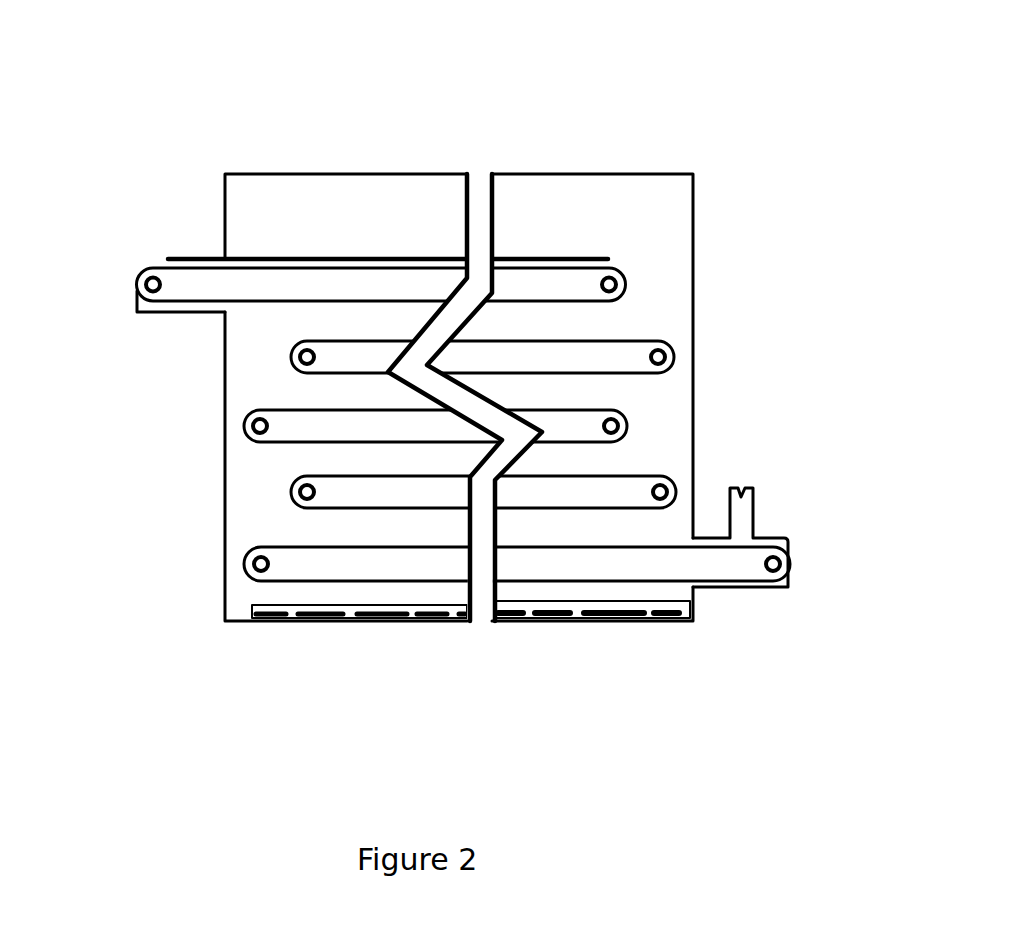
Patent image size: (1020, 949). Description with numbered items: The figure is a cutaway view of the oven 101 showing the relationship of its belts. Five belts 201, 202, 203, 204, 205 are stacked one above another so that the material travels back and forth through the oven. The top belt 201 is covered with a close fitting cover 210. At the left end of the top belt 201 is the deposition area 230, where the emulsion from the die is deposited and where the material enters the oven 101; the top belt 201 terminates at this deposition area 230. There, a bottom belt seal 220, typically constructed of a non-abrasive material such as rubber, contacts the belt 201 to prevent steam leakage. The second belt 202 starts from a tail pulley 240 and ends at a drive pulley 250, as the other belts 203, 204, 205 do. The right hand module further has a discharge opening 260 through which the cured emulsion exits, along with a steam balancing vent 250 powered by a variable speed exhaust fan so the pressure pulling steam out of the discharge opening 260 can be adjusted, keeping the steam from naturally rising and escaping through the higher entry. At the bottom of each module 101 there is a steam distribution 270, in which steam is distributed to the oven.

The oven 101 is at (533, 128).
The close fitting cover 210 is at (375, 257).
The deposition area 230 is at (160, 262).
The bottom belt seal 220 is at (133, 315).
The belt 201 is at (563, 283).
The belt 202 is at (590, 358).
The tail pulley 240 is at (662, 356).
The belt 203 is at (565, 427).
The belt 204 is at (568, 498).
The belt 205 is at (680, 563).
The drive pulley / steam balancing vent 250 is at (287, 360).
The discharge opening 260 is at (790, 553).
The steam distribution 270 is at (293, 612).